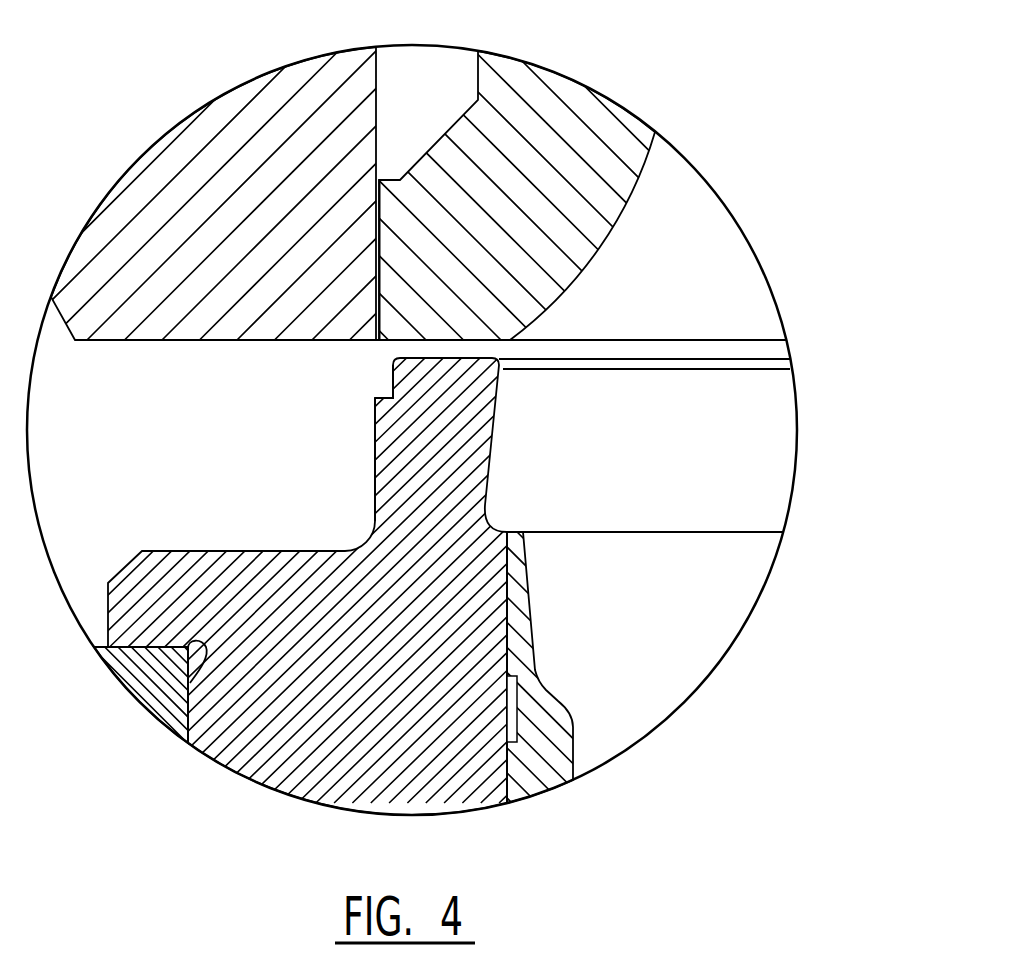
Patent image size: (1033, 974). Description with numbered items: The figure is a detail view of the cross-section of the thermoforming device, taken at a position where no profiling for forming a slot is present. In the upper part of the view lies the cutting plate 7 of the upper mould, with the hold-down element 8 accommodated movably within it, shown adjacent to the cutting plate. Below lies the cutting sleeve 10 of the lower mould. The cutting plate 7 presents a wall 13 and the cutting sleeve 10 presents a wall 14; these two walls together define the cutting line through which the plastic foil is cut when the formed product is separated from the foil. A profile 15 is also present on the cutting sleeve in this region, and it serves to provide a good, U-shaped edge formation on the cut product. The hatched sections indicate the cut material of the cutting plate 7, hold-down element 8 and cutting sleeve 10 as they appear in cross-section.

The cutting plate 7 is at (188, 158).
The hold-down element 8 is at (552, 105).
The wall 13 is at (376, 265).
The cutting sleeve 10 is at (296, 760).
The wall 14 is at (375, 455).
The profile 15 is at (393, 380).